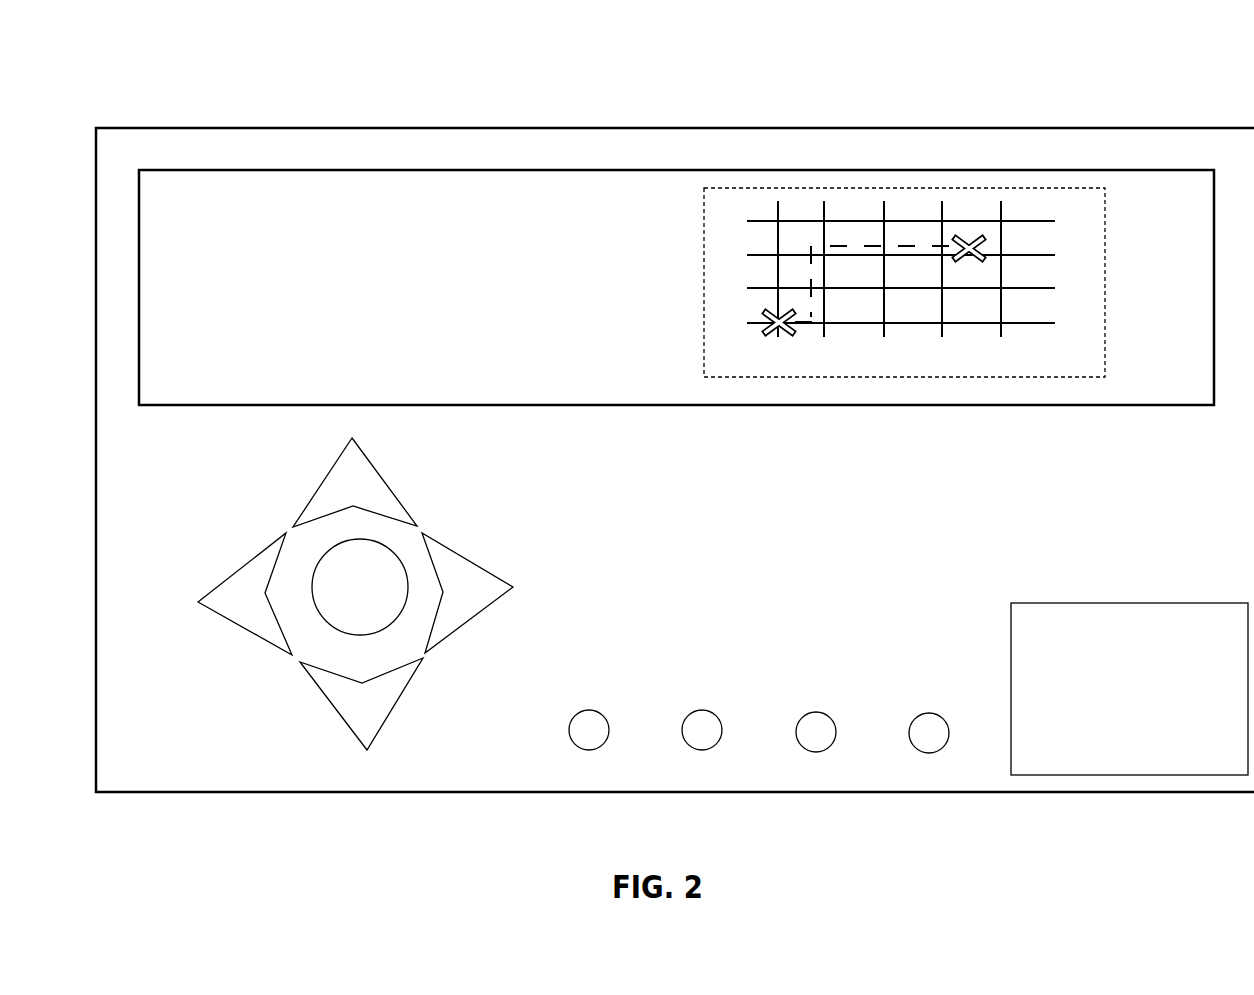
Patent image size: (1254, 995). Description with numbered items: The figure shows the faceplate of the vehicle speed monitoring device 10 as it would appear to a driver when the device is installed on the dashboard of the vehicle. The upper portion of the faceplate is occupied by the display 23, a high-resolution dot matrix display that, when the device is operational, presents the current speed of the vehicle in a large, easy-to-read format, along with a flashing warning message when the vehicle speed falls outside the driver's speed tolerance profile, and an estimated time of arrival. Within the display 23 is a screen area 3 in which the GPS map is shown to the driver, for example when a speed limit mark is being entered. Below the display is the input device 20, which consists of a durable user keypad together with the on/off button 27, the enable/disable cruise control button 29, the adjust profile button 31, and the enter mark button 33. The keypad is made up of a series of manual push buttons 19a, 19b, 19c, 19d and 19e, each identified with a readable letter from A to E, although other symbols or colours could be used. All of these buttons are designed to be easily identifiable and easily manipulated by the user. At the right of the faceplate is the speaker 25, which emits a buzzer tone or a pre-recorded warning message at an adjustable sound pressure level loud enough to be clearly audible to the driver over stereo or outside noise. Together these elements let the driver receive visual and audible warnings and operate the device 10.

The vehicle speed monitoring device 10 is at (1100, 100).
The screen area 3 is at (1020, 207).
The display 23 is at (1201, 211).
The speaker 25 is at (1242, 637).
The input device 20 is at (460, 530).
The manual push button 19a is at (431, 474).
The manual push button 19b is at (233, 569).
The manual push button 19c is at (321, 736).
The manual push button 19d is at (513, 644).
The manual push button 19e is at (379, 667).
The on/off button 27 is at (647, 731).
The enable/disable cruise control button 29 is at (751, 726).
The adjust profile button 31 is at (869, 727).
The enter mark button 33 is at (986, 727).